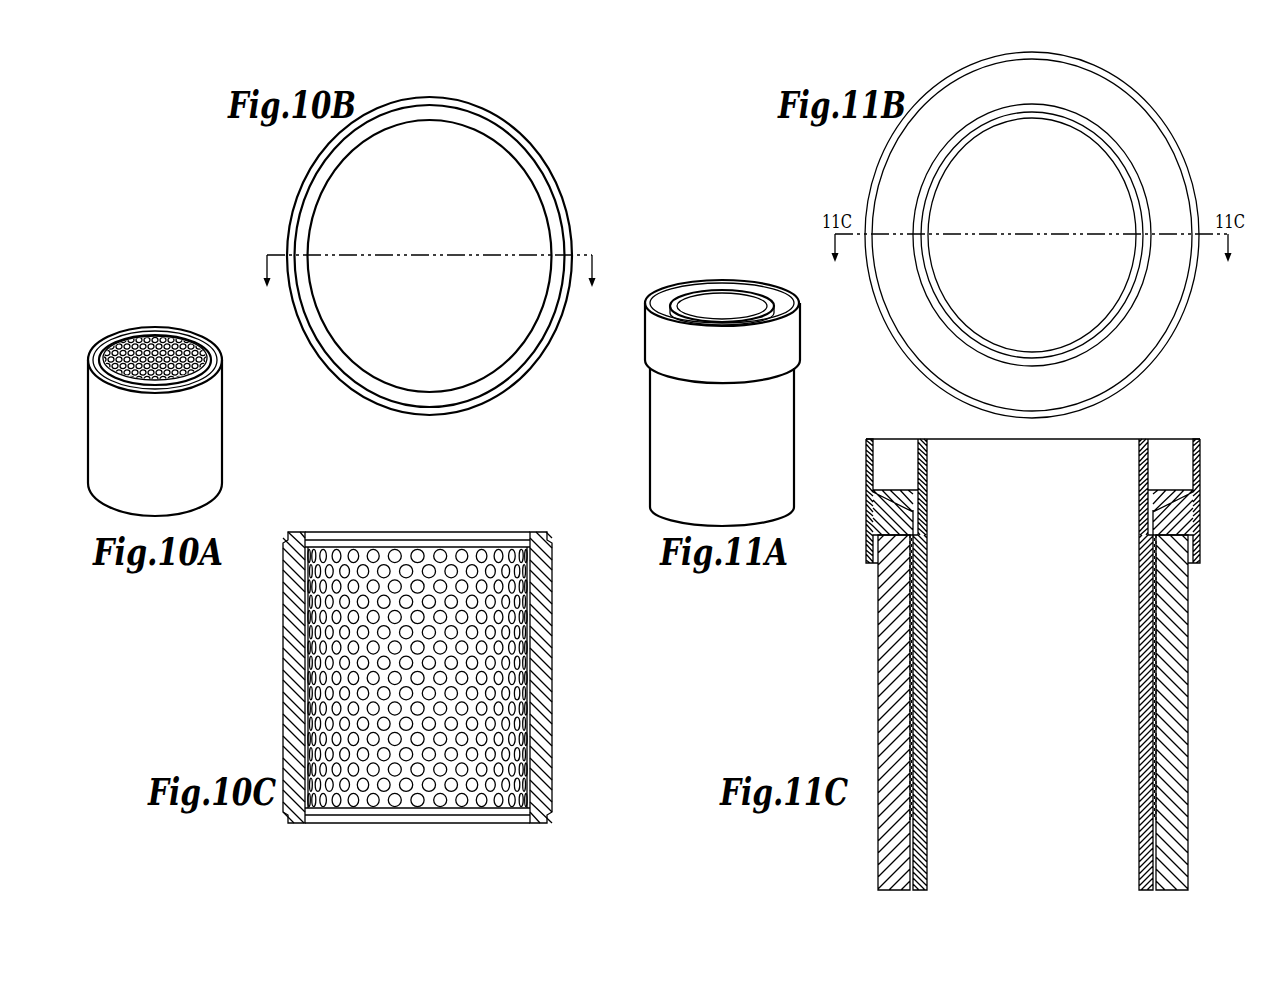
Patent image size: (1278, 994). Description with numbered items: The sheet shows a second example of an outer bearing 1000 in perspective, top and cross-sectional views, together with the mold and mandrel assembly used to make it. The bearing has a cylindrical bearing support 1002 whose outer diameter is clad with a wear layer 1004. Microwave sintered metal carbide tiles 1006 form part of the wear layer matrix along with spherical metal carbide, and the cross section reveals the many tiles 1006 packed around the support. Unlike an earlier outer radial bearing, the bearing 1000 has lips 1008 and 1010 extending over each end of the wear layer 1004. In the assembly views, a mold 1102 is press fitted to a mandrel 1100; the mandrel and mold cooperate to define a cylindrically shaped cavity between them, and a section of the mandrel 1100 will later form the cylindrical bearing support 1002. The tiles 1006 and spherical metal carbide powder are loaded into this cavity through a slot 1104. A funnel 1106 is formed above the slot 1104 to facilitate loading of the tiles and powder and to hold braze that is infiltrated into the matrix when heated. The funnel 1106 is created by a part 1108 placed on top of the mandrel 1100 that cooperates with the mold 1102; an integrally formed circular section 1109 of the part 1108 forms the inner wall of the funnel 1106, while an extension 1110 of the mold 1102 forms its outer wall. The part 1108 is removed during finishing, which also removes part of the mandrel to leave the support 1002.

In FIG. 10A, the outer bearing 1000 is at (192, 388).
In FIG. 10B, the outer bearing 1000 is at (410, 256).
In FIG. 10C, the outer bearing 1000 is at (455, 661).
In FIG. 10A, the cylindrical bearing support 1002 is at (218, 467).
In FIG. 10B, the cylindrical bearing support 1002 is at (332, 372).
In FIG. 10C, the cylindrical bearing support 1002 is at (553, 660).
In FIG. 11C, the cylindrical bearing support 1002 is at (861, 535).
In FIG. 10A, the wear layer 1004 is at (158, 325).
In FIG. 10B, the wear layer 1004 is at (330, 308).
In FIG. 10C, the wear layer 1004 is at (417, 670).
In FIG. 10A, the microwave sintered metal carbide tiles 1006 is at (196, 345).
In FIG. 10C, the microwave sintered metal carbide tiles 1006 is at (448, 572).
In FIG. 11C, the microwave sintered metal carbide tiles 1006 is at (912, 690).
In FIG. 10A, the lip 1008 is at (208, 337).
In FIG. 10C, the lip 1008 is at (315, 537).
In FIG. 10C, the lip 1010 is at (312, 823).
In FIG. 11A, the mandrel 1100 is at (665, 493).
In FIG. 11C, the mandrel 1100 is at (878, 867).
In FIG. 11A, the mold 1102 is at (705, 304).
In FIG. 11B, the mold 1102 is at (1117, 165).
In FIG. 11C, the mold 1102 is at (929, 755).
In FIG. 11B, the slot 1104 is at (1122, 150).
In FIG. 11C, the slot 1104 is at (909, 505).
In FIG. 11A, the funnel 1106 is at (660, 294).
In FIG. 11B, the funnel 1106 is at (888, 203).
In FIG. 11C, the funnel 1106 is at (890, 432).
In FIG. 11A, the part 1108 is at (652, 355).
In FIG. 11B, the part 1108 is at (1168, 345).
In FIG. 11C, the part 1108 is at (866, 518).
In FIG. 11A, the circular section 1109 is at (797, 297).
In FIG. 11B, the circular section 1109 is at (1183, 315).
In FIG. 11C, the circular section 1109 is at (859, 439).
In FIG. 11A, the extension 1110 is at (733, 290).
In FIG. 11B, the extension 1110 is at (1116, 312).
In FIG. 11C, the extension 1110 is at (931, 439).